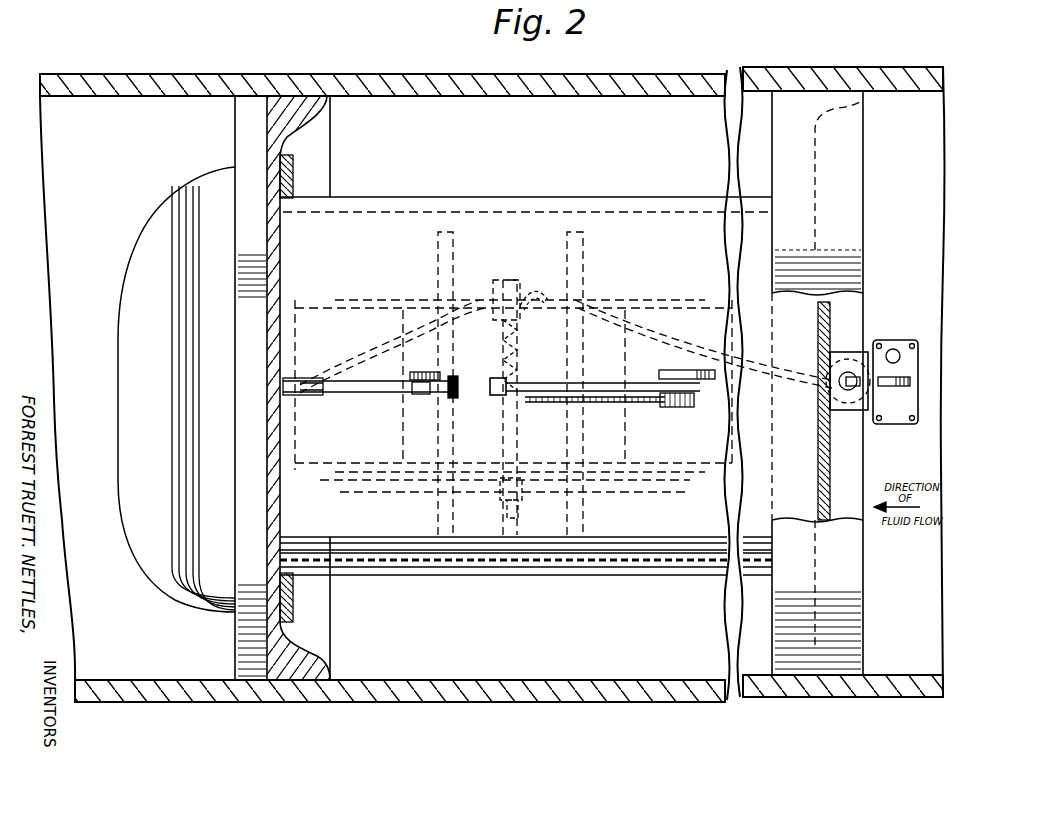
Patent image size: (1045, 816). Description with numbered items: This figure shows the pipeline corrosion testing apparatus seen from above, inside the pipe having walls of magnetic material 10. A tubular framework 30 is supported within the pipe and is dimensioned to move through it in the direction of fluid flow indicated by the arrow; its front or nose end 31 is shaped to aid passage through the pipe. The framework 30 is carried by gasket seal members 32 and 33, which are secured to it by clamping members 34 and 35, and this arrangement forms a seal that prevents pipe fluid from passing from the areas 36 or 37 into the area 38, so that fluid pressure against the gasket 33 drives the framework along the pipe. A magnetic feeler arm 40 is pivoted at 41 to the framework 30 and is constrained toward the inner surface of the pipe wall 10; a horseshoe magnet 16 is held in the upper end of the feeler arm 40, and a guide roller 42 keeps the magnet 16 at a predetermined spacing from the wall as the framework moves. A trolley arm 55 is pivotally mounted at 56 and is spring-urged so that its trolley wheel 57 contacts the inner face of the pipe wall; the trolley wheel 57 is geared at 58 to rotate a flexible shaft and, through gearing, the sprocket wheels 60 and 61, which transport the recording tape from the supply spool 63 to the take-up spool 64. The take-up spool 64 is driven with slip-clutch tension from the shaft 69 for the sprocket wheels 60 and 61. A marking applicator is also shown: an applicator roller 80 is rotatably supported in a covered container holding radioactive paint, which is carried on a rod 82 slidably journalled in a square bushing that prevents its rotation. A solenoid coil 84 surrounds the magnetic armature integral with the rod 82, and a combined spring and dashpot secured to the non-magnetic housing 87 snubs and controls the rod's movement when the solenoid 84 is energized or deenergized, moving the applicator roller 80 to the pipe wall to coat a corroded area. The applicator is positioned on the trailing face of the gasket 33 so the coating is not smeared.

The pipe wall of magnetic material 10 is at (638, 90).
The horseshoe magnet 16 is at (432, 396).
The framework 30 is at (618, 567).
The nose end 31 is at (172, 192).
The gasket seal member 32 is at (322, 640).
The gasket seal member 33 is at (850, 588).
The clamping member 34 is at (293, 178).
The clamping member 35 is at (825, 462).
The area 36 is at (918, 173).
The area 37 is at (57, 137).
The area 38 is at (520, 666).
The feeler arm 40 is at (369, 385).
The pivot 41 is at (300, 394).
The guide roller 42 is at (425, 372).
The trolley arm 55 is at (603, 384).
The pivot 56 is at (498, 395).
The trolley wheel 57 is at (672, 370).
The gearing 58 is at (668, 406).
The sprocket wheel 60 is at (532, 312).
The sprocket wheel 61 is at (562, 462).
The supply spool 63 is at (700, 300).
The take-up spool 64 is at (312, 305).
The shaft 69 is at (507, 452).
The applicator roller 80 is at (906, 378).
The rod 82 is at (852, 376).
The solenoid coil 84 is at (845, 370).
The housing 87 is at (905, 396).